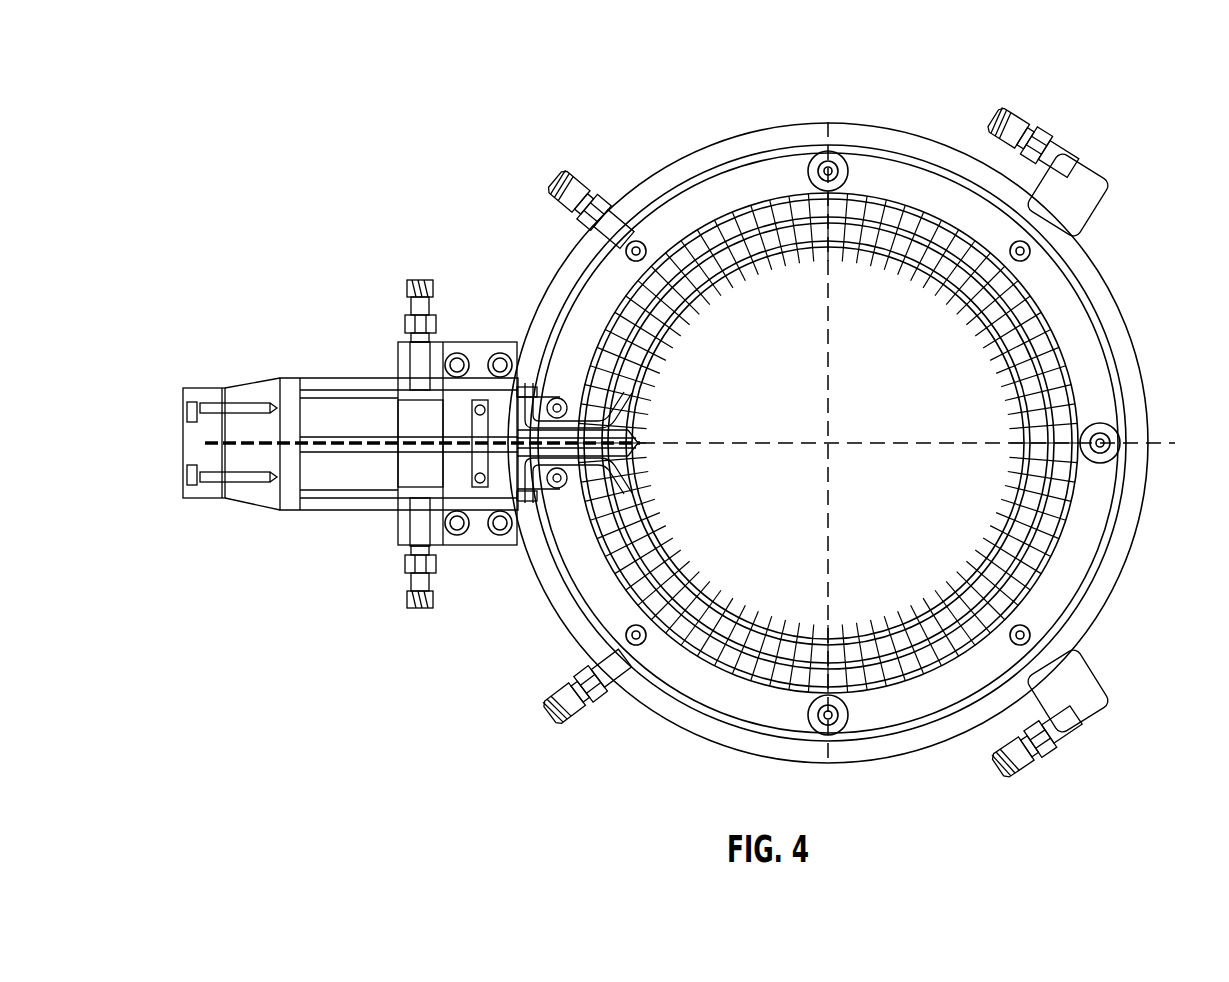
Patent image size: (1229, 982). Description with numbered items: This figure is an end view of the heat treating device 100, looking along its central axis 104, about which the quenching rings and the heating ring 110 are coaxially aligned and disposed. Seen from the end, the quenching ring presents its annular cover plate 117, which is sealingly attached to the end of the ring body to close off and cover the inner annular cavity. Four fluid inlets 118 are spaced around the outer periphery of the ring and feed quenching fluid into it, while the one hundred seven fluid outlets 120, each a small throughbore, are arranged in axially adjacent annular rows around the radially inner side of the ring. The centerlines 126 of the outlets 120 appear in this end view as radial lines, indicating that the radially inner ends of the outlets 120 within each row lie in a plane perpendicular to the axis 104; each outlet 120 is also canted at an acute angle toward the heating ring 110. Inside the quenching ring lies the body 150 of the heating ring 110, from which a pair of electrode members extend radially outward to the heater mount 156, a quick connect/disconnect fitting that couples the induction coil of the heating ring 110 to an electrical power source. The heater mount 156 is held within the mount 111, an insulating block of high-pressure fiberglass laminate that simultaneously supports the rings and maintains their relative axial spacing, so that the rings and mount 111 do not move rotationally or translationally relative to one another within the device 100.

The heat treating device 100 is at (408, 98).
The central axis 104 is at (830, 441).
The heating ring 110 is at (680, 300).
The mount 111 is at (473, 338).
The annular cover plate 117 is at (1103, 517).
The fluid inlets 118 is at (565, 173).
The fluid outlets 120 is at (740, 610).
The centerlines of outlets 126 is at (960, 302).
The body of heating ring 150 is at (868, 648).
The heater mount 156 is at (337, 377).